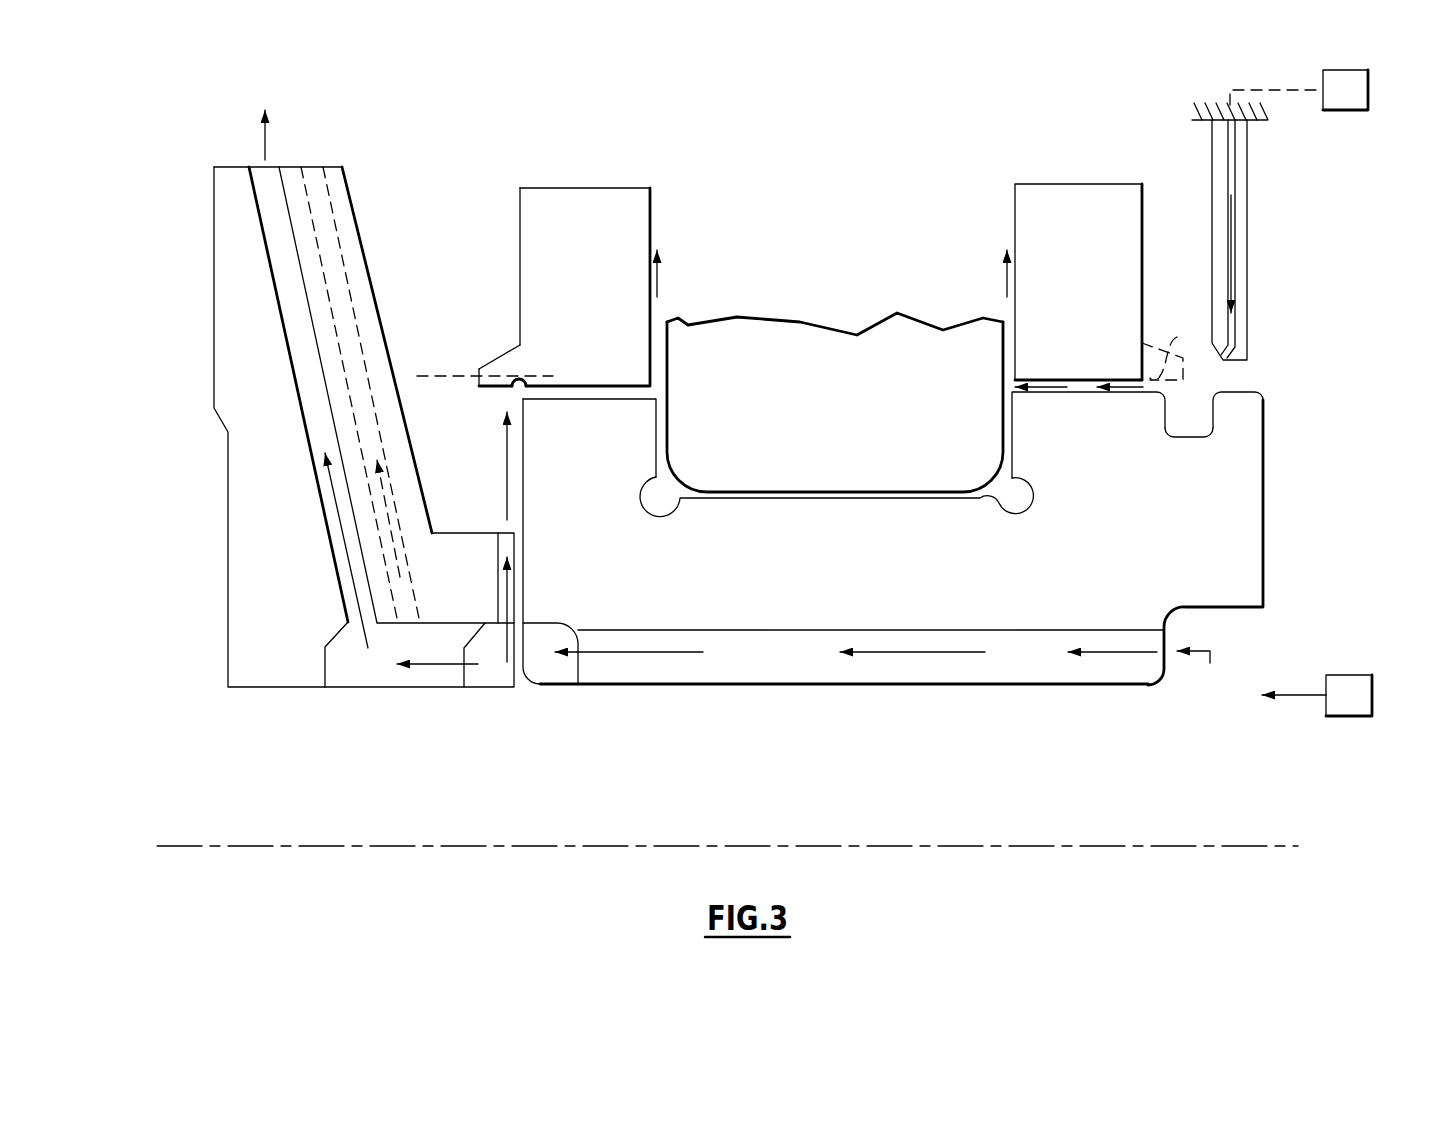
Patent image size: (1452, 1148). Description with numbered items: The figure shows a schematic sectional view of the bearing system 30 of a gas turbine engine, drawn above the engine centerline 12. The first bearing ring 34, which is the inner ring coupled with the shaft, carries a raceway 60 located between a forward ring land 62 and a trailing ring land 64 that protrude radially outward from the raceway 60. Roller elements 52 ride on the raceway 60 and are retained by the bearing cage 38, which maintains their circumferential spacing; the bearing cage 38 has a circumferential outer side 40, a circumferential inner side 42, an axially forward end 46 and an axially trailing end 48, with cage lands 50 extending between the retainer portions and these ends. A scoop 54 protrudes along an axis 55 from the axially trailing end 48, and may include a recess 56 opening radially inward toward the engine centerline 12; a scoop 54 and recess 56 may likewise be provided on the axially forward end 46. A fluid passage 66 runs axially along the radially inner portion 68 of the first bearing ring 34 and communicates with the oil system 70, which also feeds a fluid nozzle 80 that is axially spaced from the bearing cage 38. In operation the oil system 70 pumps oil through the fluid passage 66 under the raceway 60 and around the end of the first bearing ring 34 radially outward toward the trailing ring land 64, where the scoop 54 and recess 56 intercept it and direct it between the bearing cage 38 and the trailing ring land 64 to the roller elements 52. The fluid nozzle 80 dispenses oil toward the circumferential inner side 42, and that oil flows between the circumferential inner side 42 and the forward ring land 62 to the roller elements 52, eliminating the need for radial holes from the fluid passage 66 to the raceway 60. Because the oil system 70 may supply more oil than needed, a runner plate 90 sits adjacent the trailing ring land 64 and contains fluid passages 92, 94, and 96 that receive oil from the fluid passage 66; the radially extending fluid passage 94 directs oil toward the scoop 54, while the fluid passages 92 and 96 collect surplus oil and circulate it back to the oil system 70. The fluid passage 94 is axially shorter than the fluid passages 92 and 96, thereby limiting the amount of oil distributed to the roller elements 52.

The engine centerline 12 is at (200, 848).
The bearing system 30 is at (445, 140).
The first bearing ring 34 is at (1264, 483).
The bearing cage 38 is at (1125, 252).
The circumferential outer side 40 is at (1085, 183).
The circumferential inner side 42 is at (1082, 390).
The axially forward end 46 is at (1143, 297).
The axially trailing end 48 is at (518, 240).
The cage lands 50 is at (618, 329).
The roller elements 52 is at (770, 357).
The scoop 54 is at (485, 367).
The axis 55 is at (429, 377).
The recess 56 is at (532, 380).
The raceway 60 is at (1003, 503).
The forward ring land 62 is at (1135, 412).
The trailing ring land 64 is at (540, 442).
The fluid passage 66 is at (1020, 667).
The radially inner portion 68 is at (934, 692).
The oil system 70 is at (1368, 100).
The fluid nozzle 80 is at (1248, 295).
The runner plate 90 is at (255, 493).
The fluid passage 92 is at (290, 220).
The fluid passage 94 is at (497, 550).
The fluid passage 96 is at (347, 272).